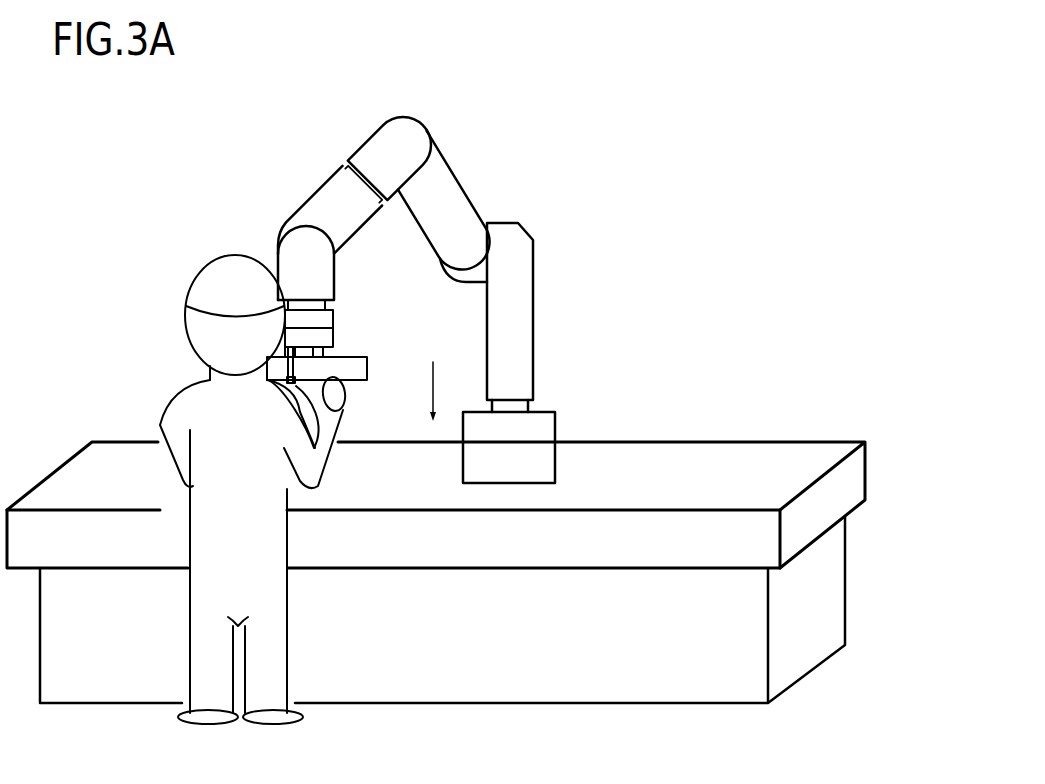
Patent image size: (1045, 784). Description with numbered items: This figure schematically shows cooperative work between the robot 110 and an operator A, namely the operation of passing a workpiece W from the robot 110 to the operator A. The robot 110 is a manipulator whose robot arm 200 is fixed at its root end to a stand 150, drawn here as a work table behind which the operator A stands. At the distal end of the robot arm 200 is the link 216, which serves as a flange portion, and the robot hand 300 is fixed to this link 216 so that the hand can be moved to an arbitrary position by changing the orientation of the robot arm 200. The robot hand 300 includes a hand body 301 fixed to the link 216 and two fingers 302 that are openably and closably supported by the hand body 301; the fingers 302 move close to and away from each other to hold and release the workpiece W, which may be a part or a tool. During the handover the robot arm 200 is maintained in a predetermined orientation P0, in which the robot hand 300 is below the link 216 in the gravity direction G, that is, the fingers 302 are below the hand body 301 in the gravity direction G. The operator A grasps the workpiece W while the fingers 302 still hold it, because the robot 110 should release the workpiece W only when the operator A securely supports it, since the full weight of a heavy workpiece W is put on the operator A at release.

The robot arm 200 is at (384, 228).
The robot 110 is at (432, 258).
The operator A is at (203, 260).
The link 216 is at (322, 320).
The robot hand 300 is at (363, 357).
The hand body 301 is at (317, 342).
The fingers 302 is at (331, 405).
The workpiece W is at (343, 370).
The gravity direction G is at (437, 394).
The predetermined orientation P0 is at (587, 263).
The stand 150 is at (710, 458).